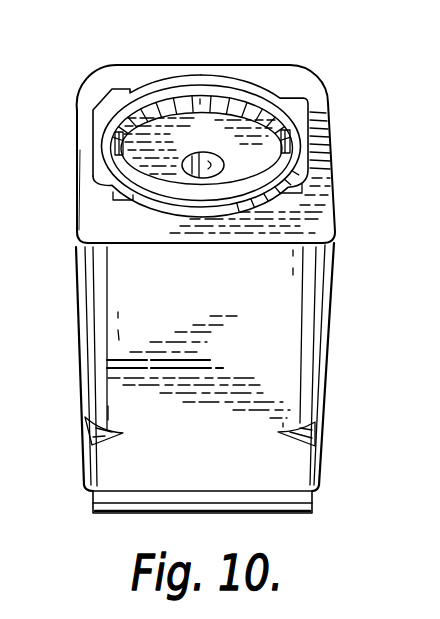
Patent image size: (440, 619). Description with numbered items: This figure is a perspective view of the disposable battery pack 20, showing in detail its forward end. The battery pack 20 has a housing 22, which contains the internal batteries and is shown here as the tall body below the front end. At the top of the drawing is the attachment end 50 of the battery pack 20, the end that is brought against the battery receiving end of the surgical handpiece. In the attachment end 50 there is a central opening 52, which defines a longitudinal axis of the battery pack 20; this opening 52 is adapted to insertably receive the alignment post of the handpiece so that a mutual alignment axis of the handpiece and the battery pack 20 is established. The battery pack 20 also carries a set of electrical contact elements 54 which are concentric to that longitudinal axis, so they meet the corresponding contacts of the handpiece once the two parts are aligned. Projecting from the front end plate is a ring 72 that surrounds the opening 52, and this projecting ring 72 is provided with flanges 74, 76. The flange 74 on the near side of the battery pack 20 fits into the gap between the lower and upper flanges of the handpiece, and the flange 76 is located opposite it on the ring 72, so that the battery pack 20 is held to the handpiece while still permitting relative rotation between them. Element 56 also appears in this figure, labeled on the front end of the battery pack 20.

The battery pack 20 is at (72, 318).
The housing 22 is at (331, 367).
The attachment end 50 is at (293, 263).
The central opening 52 is at (212, 153).
The electrical contact elements 54 is at (114, 146).
The cap 56 is at (90, 200).
The projecting ring 72 is at (188, 74).
The flange 74 is at (80, 117).
The flange 76 is at (308, 110).